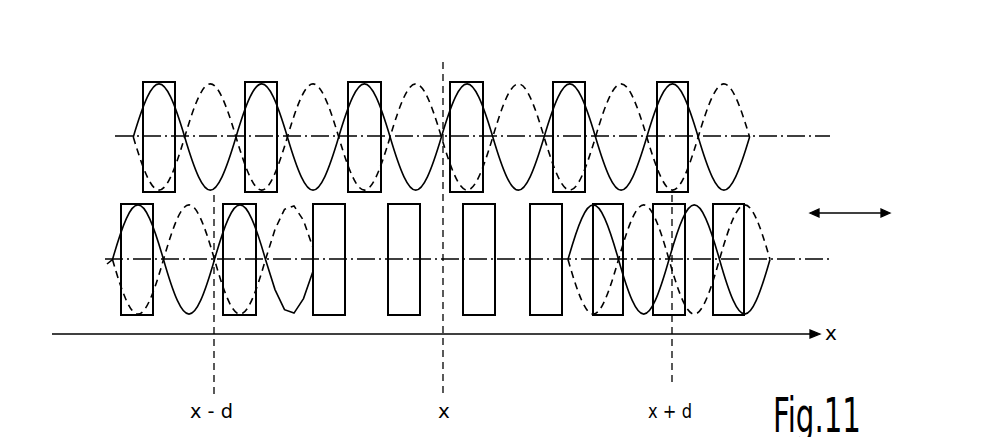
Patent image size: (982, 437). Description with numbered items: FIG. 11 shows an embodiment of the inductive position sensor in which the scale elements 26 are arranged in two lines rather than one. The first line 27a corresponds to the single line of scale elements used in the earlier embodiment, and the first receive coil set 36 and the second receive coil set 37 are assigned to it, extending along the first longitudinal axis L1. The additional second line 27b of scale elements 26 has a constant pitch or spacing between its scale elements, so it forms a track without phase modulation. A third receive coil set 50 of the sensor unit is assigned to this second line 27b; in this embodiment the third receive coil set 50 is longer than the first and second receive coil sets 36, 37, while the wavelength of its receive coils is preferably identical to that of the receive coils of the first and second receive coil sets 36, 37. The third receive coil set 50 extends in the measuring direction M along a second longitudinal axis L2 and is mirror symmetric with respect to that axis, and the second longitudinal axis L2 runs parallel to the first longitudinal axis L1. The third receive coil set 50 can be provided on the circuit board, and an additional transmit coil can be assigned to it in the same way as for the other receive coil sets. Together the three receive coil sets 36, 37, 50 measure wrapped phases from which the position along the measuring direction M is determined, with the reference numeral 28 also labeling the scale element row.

The scale elements 26 is at (280, 88).
The receiver coil 28 is at (261, 137).
The third receive coil set 50 is at (534, 76).
The first line 27a is at (96, 236).
The second line 27b is at (104, 111).
The first receive coil set 36 is at (271, 310).
The second receive coil set 37 is at (635, 323).
The first longitudinal axis L1 is at (810, 258).
The second longitudinal axis L2 is at (807, 133).
The measuring direction M is at (840, 213).